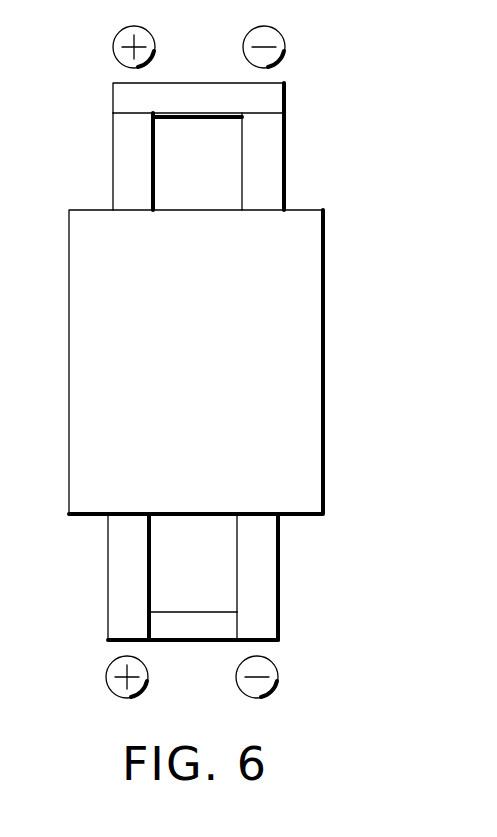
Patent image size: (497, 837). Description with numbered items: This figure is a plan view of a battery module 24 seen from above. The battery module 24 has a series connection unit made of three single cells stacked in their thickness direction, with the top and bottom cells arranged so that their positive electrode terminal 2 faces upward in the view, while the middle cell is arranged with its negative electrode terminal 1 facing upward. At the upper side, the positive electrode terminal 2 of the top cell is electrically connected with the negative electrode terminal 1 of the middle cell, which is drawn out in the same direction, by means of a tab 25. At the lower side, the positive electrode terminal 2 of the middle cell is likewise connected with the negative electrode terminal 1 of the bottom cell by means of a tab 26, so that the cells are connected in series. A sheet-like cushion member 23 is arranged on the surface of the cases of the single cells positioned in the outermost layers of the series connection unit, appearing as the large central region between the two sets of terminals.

The battery module 24 is at (347, 81).
The cushion member 23 is at (315, 356).
The tab 25 is at (200, 85).
The tab 26 is at (197, 640).
The negative electrode terminal 1 is at (275, 152).
The positive electrode terminal 2 is at (113, 150).